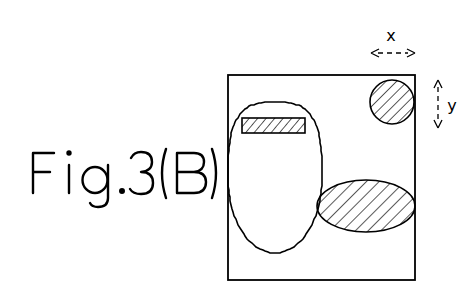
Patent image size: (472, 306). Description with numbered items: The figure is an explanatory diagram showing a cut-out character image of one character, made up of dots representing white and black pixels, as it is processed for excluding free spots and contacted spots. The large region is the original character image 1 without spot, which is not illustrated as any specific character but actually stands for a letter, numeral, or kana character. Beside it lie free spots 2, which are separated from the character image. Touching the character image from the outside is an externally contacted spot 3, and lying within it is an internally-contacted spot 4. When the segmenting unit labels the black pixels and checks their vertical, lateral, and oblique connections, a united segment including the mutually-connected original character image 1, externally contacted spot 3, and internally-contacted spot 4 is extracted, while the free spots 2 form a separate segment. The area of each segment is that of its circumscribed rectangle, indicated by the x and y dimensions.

The original character image 1 is at (308, 231).
The free spots 2 is at (370, 103).
The externally contacted spot 3 is at (372, 232).
The internally-contacted spot 4 is at (281, 133).